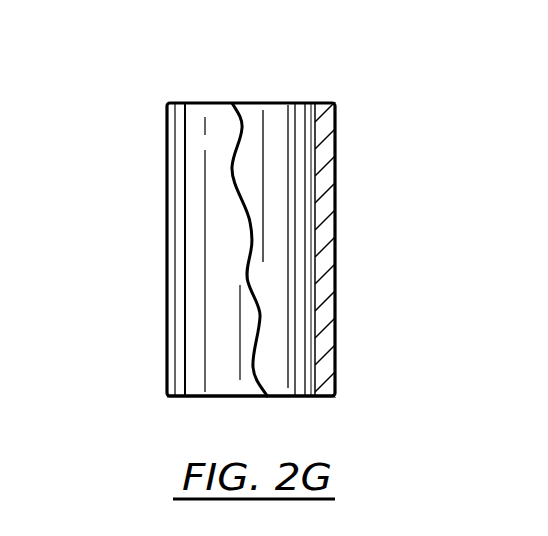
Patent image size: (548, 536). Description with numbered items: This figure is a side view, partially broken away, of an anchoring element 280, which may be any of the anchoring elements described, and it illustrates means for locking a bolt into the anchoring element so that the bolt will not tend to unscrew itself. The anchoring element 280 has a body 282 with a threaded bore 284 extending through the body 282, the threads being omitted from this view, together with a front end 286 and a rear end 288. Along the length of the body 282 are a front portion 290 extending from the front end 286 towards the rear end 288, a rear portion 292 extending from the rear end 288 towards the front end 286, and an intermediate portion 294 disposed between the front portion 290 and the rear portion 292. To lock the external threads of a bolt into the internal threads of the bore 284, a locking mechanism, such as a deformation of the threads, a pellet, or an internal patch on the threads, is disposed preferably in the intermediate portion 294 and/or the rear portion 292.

The anchoring element 280 is at (156, 93).
The body 282 is at (184, 272).
The threaded bore 284 is at (277, 131).
The front end 286 is at (209, 103).
The rear end 288 is at (200, 402).
The front portion 290 is at (346, 103).
The rear portion 292 is at (346, 298).
The intermediate portion 294 is at (346, 200).